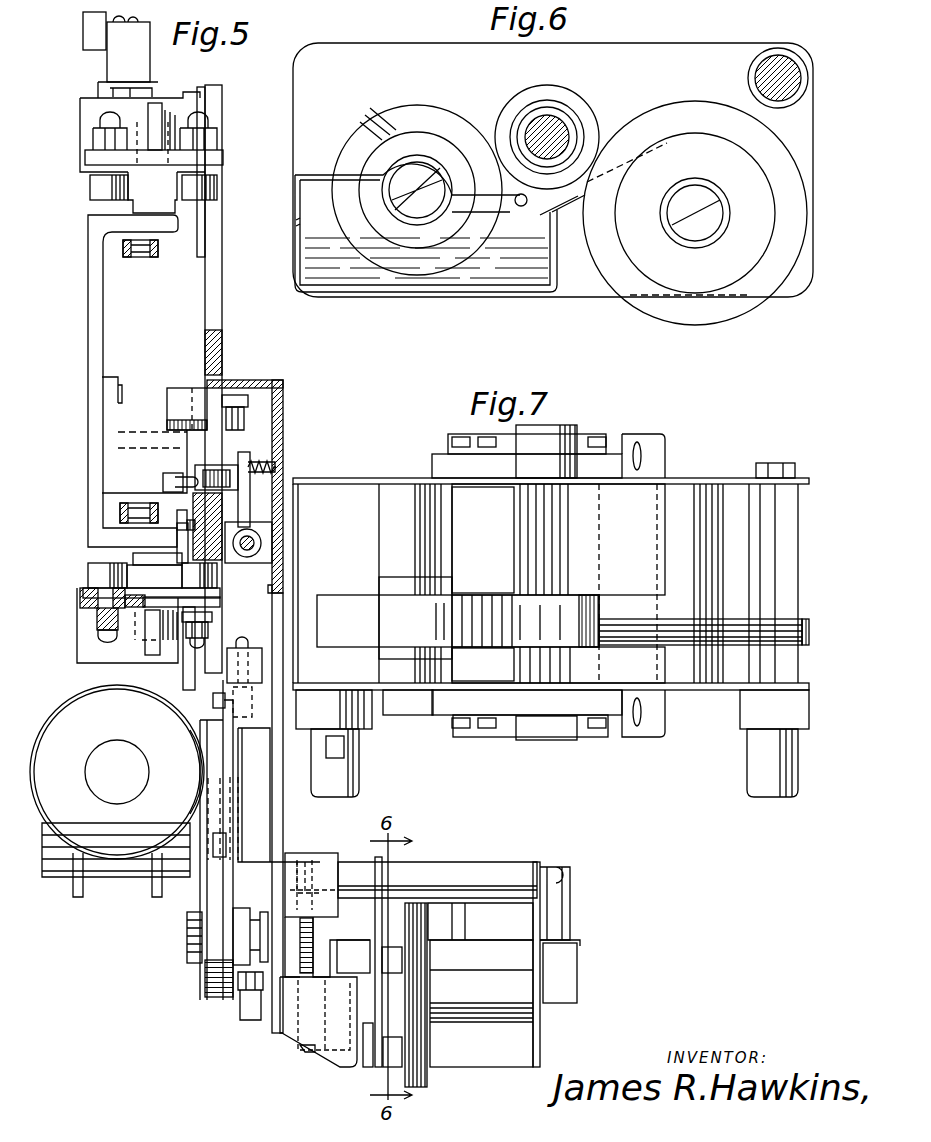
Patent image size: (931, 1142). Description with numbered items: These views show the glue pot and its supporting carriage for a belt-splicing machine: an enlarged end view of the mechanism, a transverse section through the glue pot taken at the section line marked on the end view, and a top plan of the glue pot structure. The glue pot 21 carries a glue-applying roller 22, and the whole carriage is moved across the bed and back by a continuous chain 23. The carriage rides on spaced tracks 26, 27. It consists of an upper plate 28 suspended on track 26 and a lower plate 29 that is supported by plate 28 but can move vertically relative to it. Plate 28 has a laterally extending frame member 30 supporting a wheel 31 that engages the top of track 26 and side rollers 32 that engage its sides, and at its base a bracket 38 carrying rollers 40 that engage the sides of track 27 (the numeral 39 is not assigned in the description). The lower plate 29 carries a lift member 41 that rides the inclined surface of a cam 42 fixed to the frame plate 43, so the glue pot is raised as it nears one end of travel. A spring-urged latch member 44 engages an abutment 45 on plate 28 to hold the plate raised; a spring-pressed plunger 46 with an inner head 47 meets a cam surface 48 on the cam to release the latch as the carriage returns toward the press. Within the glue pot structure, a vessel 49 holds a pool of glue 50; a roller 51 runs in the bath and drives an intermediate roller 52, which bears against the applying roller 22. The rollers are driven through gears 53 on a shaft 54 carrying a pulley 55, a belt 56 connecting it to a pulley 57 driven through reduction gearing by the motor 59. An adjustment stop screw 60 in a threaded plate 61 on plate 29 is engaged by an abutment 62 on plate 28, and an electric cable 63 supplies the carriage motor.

In FIG. 5, the glue pot 21 is at (441, 860).
In FIG. 6, the glue pot 21 is at (681, 38).
In FIG. 7, the glue pot 21 is at (706, 475).
In FIG. 5, the glue-applying roller 22 is at (427, 1081).
In FIG. 6, the glue-applying roller 22 is at (697, 102).
In FIG. 7, the glue-applying roller 22 is at (678, 623).
In FIG. 5, the continuous chain 23 is at (140, 257).
In FIG. 5, the track 26 is at (140, 190).
In FIG. 5, the track 27 is at (133, 565).
In FIG. 5, the upper plate 28 is at (218, 303).
In FIG. 5, the lower plate 29 is at (291, 440).
In FIG. 5, the frame member 30 is at (80, 119).
In FIG. 5, the wheel 31 is at (147, 126).
In FIG. 5, the side rollers 32 is at (90, 188).
In FIG. 5, the bracket 38 is at (77, 644).
In FIG. 5, the pin 39 is at (145, 640).
In FIG. 5, the rollers 40 is at (88, 574).
In FIG. 5, the lift member 41 is at (183, 390).
In FIG. 5, the cam 42 is at (138, 436).
In FIG. 5, the frame plate 43 is at (88, 327).
In FIG. 5, the latch member 44 is at (248, 520).
In FIG. 5, the abutment 45 is at (225, 470).
In FIG. 5, the plunger 46 is at (283, 472).
In FIG. 5, the plunger head 47 is at (195, 480).
In FIG. 5, the cam surface 48 is at (163, 482).
In FIG. 6, the glue-containing vessel 49 is at (497, 292).
In FIG. 6, the pool of glue 50 is at (540, 272).
In FIG. 6, the roller 51 is at (430, 115).
In FIG. 7, the roller 51 is at (351, 602).
In FIG. 5, the intermediate roller 52 is at (441, 908).
In FIG. 6, the intermediate roller 52 is at (558, 100).
In FIG. 7, the intermediate roller 52 is at (589, 606).
In FIG. 5, the gears 53 is at (315, 932).
In FIG. 5, the shaft 54 is at (263, 915).
In FIG. 5, the pulley 55 is at (205, 993).
In FIG. 5, the belt 56 is at (213, 908).
In FIG. 5, the pulley 57 is at (213, 849).
In FIG. 5, the motor 59 is at (95, 705).
In FIG. 5, the adjustment stop screw 60 is at (243, 650).
In FIG. 5, the threaded plate 61 is at (226, 672).
In FIG. 5, the abutment 62 is at (233, 628).
In FIG. 5, the electric cable 63 is at (124, 16).